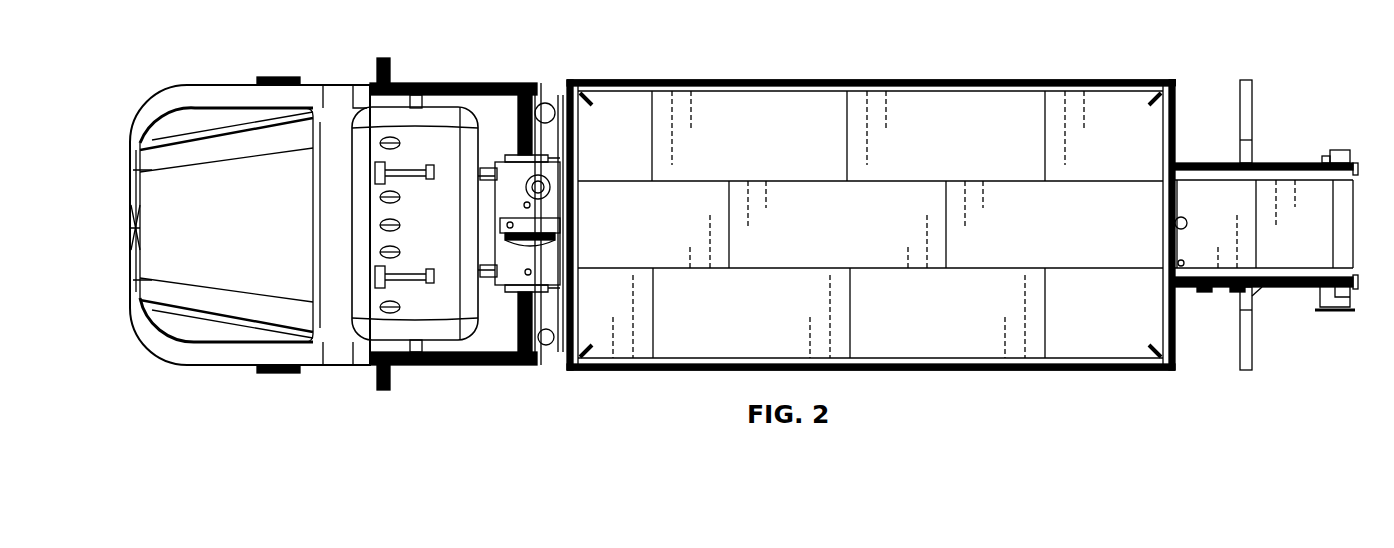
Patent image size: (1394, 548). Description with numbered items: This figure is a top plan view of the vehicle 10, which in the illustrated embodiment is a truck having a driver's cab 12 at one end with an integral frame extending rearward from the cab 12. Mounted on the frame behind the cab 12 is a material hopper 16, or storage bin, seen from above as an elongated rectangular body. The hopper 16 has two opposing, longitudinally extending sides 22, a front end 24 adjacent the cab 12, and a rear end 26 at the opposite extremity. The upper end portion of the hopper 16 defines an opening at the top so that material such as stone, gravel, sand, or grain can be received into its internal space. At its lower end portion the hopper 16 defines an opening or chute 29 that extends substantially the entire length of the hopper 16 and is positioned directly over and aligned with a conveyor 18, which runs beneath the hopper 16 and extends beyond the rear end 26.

The vehicle 10 is at (802, 77).
The driver's cab 12 is at (262, 175).
The material hopper 16 is at (901, 214).
The conveyor 18 is at (1188, 195).
The sides 22 is at (1115, 80).
The front end 24 is at (565, 112).
The rear end 26 is at (1168, 95).
The opening or chute 29 is at (903, 180).